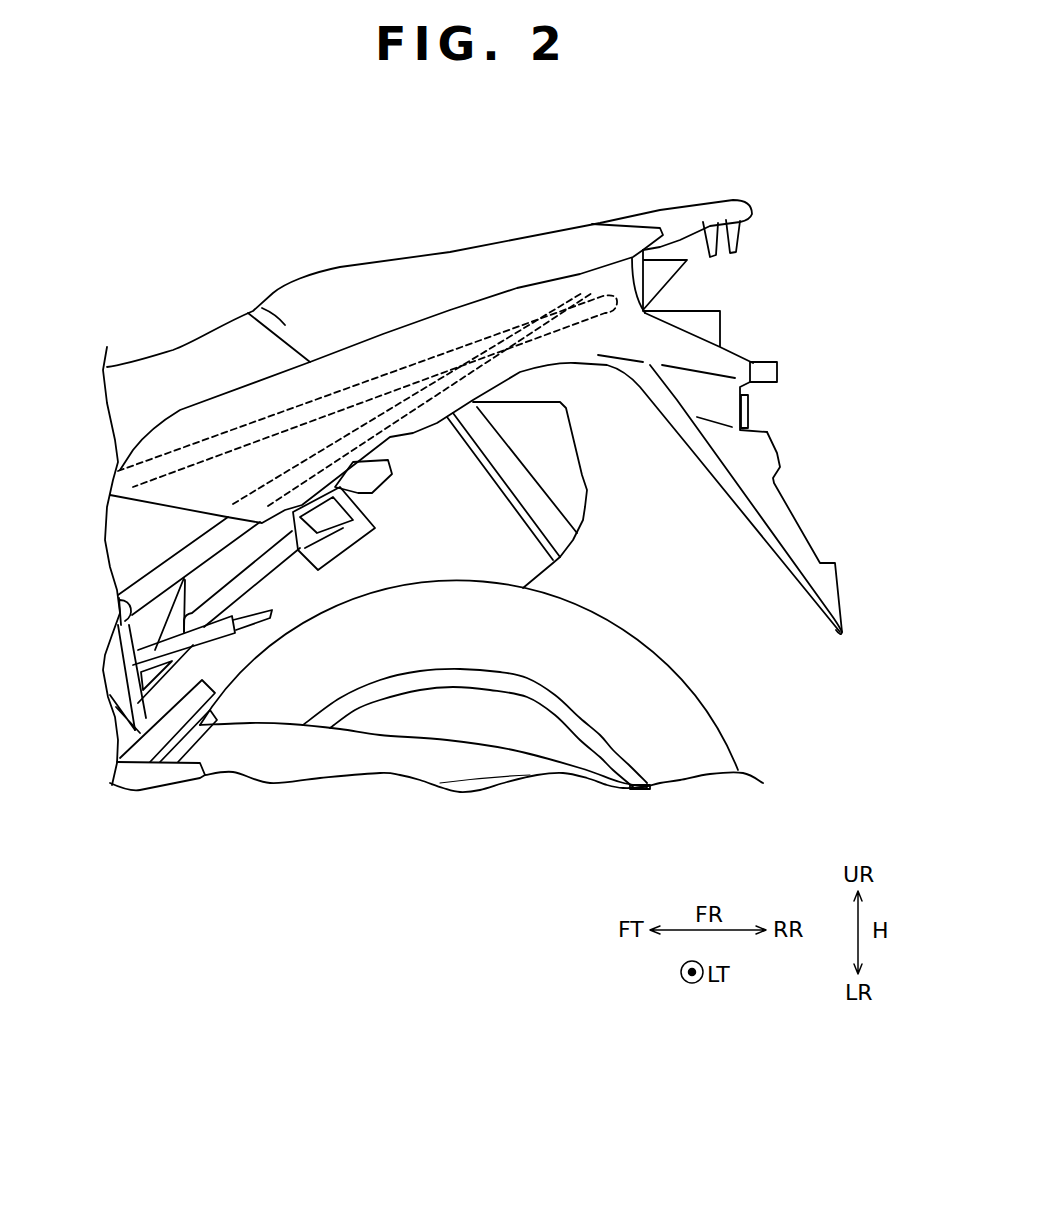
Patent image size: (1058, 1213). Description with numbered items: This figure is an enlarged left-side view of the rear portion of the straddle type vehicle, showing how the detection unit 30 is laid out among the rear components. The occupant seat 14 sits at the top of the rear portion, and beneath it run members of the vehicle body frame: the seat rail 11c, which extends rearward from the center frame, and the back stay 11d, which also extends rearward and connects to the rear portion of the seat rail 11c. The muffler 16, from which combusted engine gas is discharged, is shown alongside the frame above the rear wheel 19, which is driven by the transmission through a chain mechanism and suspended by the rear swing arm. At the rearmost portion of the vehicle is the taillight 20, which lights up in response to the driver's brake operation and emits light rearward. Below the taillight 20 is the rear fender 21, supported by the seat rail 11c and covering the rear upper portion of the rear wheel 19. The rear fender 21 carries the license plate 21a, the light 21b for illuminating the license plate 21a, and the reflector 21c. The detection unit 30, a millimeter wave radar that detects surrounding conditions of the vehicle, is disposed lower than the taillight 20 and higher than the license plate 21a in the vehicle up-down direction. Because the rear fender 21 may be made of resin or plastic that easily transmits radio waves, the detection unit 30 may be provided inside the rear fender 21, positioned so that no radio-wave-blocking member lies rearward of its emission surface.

The occupant seat 14 is at (190, 346).
The seat rail 11c is at (138, 450).
The back stay 11d is at (143, 581).
The muffler 16 is at (588, 504).
The rear wheel 19 is at (700, 716).
The taillight 20 is at (665, 289).
The detection unit 30 is at (721, 326).
The rear fender 21 is at (836, 598).
The license plate 21a is at (817, 517).
The light 21b is at (779, 372).
The reflector 21c is at (750, 412).